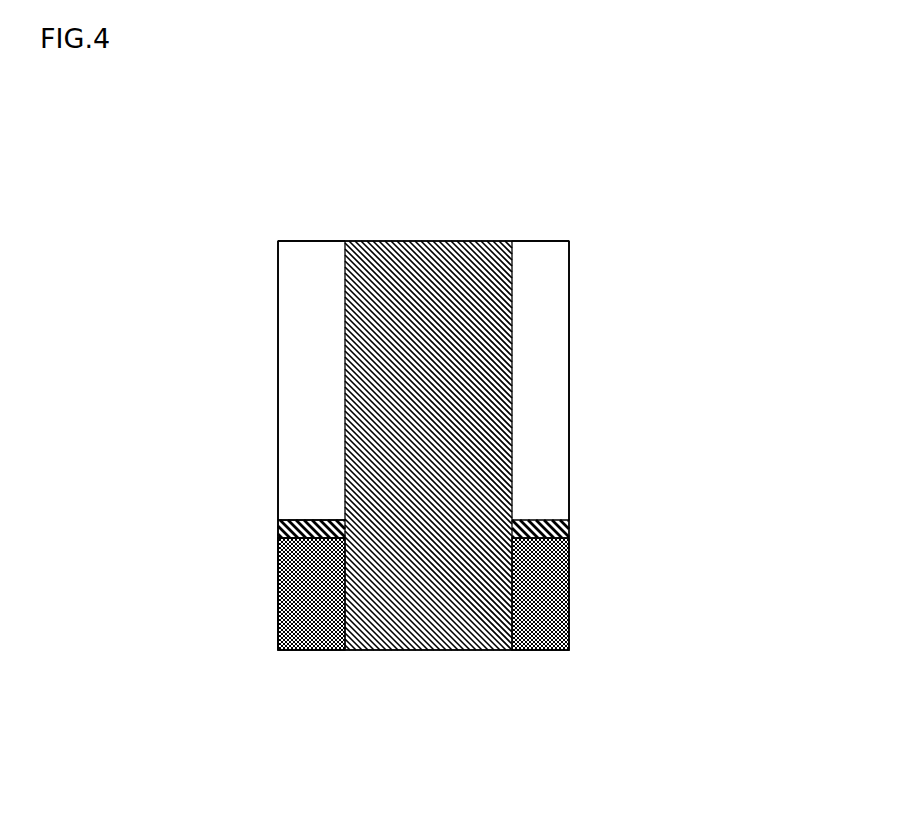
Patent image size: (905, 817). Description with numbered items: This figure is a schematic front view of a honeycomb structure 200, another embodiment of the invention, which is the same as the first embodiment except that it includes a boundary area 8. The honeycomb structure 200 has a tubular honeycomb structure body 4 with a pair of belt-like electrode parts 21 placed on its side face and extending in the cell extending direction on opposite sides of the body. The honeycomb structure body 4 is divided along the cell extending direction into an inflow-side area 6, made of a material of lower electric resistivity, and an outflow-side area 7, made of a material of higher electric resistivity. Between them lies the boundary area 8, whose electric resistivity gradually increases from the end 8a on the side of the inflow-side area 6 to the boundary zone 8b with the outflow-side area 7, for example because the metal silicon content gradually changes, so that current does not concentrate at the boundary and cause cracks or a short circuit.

The honeycomb structure 200 is at (818, 94).
The honeycomb structure body 4 is at (267, 290).
The electrode part 21 is at (334, 363).
The outflow-side area 7 is at (571, 241).
The inflow-side area 6 is at (571, 520).
The boundary area 8 is at (276, 520).
The end on the side of the inflow-side area 8a is at (306, 596).
The boundary zone with the outflow-side area 8b is at (328, 518).